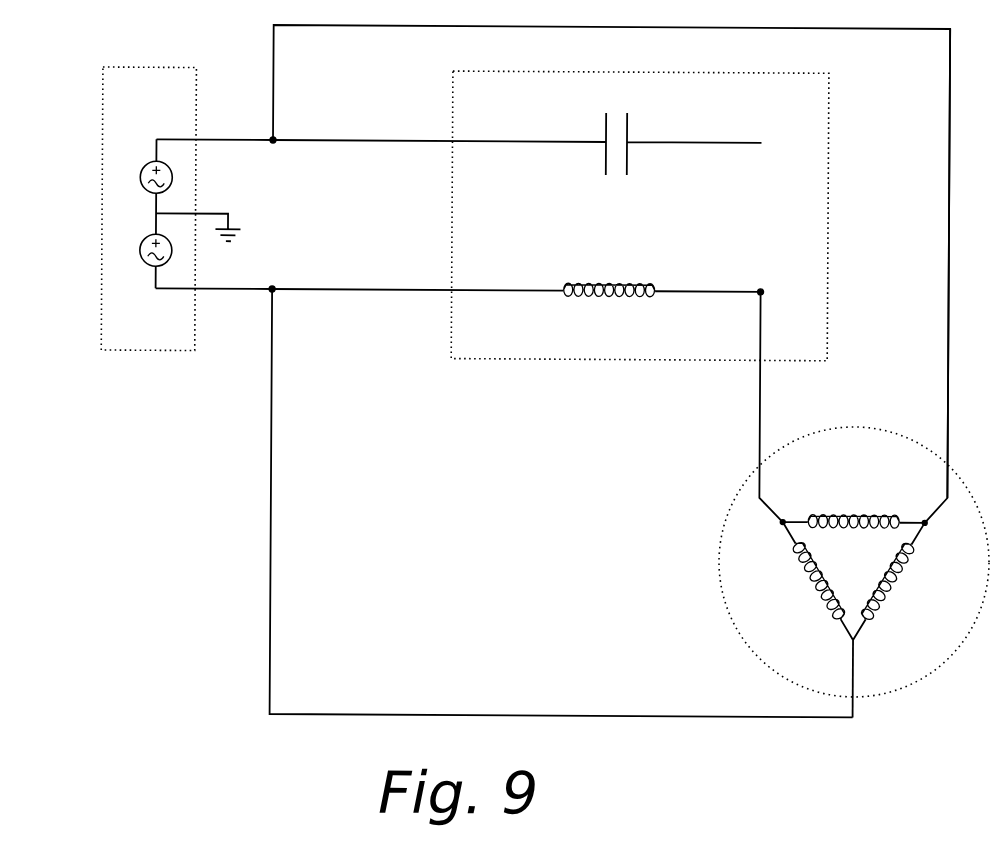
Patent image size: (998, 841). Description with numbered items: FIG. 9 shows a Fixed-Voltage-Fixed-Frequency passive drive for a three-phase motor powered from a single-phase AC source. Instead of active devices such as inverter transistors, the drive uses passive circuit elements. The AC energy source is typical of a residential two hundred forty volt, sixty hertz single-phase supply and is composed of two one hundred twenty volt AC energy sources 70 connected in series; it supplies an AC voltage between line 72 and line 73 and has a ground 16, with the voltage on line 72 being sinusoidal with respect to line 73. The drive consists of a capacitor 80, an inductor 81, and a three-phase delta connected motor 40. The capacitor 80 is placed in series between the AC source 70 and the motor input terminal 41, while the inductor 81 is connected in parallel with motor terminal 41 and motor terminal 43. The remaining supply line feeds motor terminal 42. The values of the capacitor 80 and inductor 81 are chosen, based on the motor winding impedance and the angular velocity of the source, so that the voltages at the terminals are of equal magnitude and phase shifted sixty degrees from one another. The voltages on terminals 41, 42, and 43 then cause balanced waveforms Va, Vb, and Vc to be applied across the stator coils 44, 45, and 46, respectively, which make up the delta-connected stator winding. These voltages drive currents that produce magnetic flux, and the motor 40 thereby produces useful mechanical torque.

The AC energy source 70 is at (137, 238).
The line 72 is at (229, 138).
The line 73 is at (229, 289).
The ground 16 is at (212, 211).
The capacitor 80 is at (653, 148).
The inductor 81 is at (673, 292).
The three-phase delta connected motor 40 is at (742, 657).
The motor input terminal 41 is at (760, 448).
The motor input terminal 42 is at (951, 431).
The motor input terminal 43 is at (872, 690).
The stator coil 44 is at (903, 522).
The stator coil 45 is at (862, 636).
The stator coil 46 is at (788, 536).